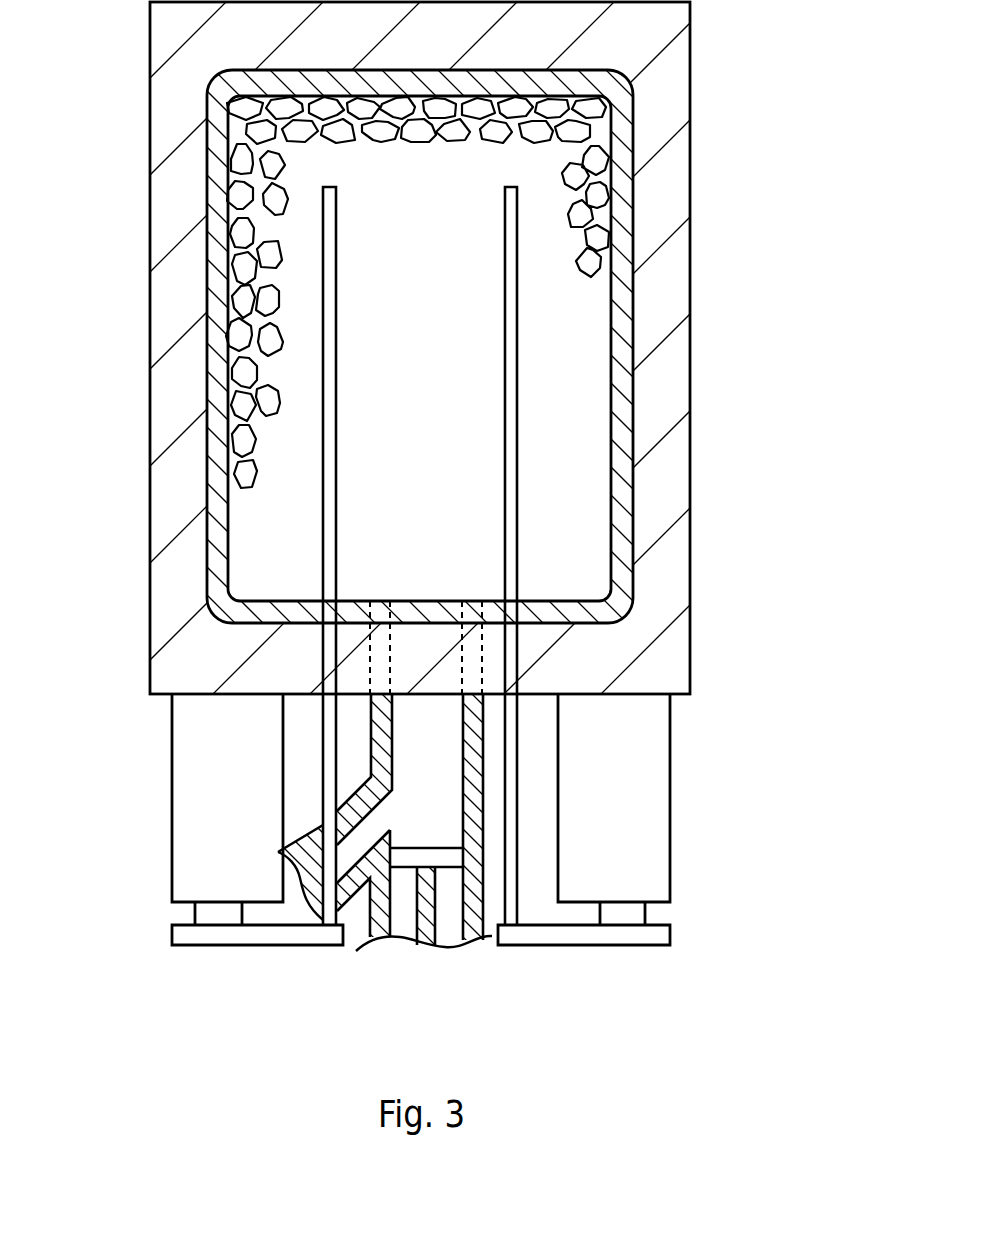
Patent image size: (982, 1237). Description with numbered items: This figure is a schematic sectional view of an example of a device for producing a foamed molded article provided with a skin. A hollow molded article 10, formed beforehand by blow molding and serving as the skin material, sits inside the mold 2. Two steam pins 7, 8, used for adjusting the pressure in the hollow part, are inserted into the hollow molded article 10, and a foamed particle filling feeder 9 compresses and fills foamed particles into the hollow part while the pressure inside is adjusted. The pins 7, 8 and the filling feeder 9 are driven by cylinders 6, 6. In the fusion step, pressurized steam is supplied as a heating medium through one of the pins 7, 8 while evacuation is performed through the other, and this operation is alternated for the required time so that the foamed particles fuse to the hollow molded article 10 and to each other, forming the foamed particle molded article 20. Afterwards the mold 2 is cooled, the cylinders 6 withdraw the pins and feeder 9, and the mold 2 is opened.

The mold 2 is at (677, 73).
The cylinder 6 is at (198, 792).
The pin 7 is at (330, 814).
The pin 8 is at (518, 845).
The filling feeder 9 is at (383, 735).
The hollow molded article 10 is at (620, 404).
The foamed particle molded article 20 is at (242, 216).